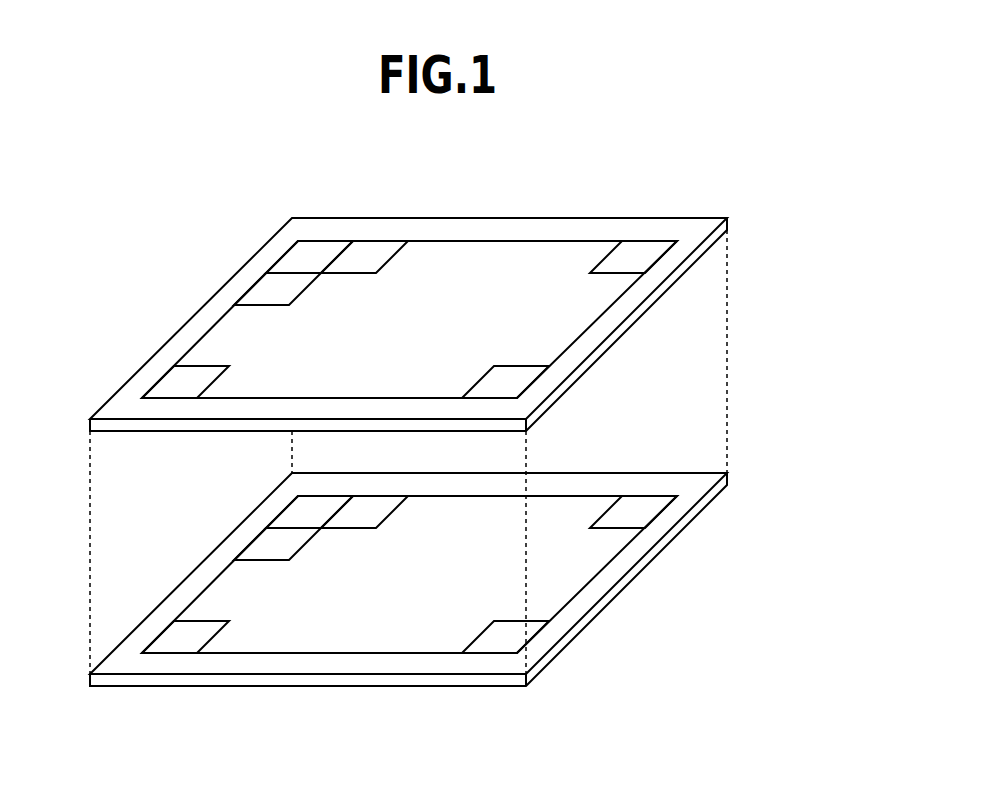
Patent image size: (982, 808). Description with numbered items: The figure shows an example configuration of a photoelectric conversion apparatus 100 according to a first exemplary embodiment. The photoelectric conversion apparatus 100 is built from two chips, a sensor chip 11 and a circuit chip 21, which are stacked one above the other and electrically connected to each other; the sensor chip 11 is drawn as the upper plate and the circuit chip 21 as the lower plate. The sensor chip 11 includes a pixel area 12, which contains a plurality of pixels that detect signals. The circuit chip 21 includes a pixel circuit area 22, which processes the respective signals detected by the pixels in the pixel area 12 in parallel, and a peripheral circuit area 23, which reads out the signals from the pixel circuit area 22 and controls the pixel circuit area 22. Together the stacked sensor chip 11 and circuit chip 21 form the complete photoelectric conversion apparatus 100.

The photoelectric conversion apparatus 100 is at (828, 278).
The sensor chip 11 is at (663, 298).
The pixel area 12 is at (236, 338).
The circuit chip 21 is at (668, 550).
The pixel circuit area 22 is at (238, 583).
The peripheral circuit area 23 is at (152, 632).